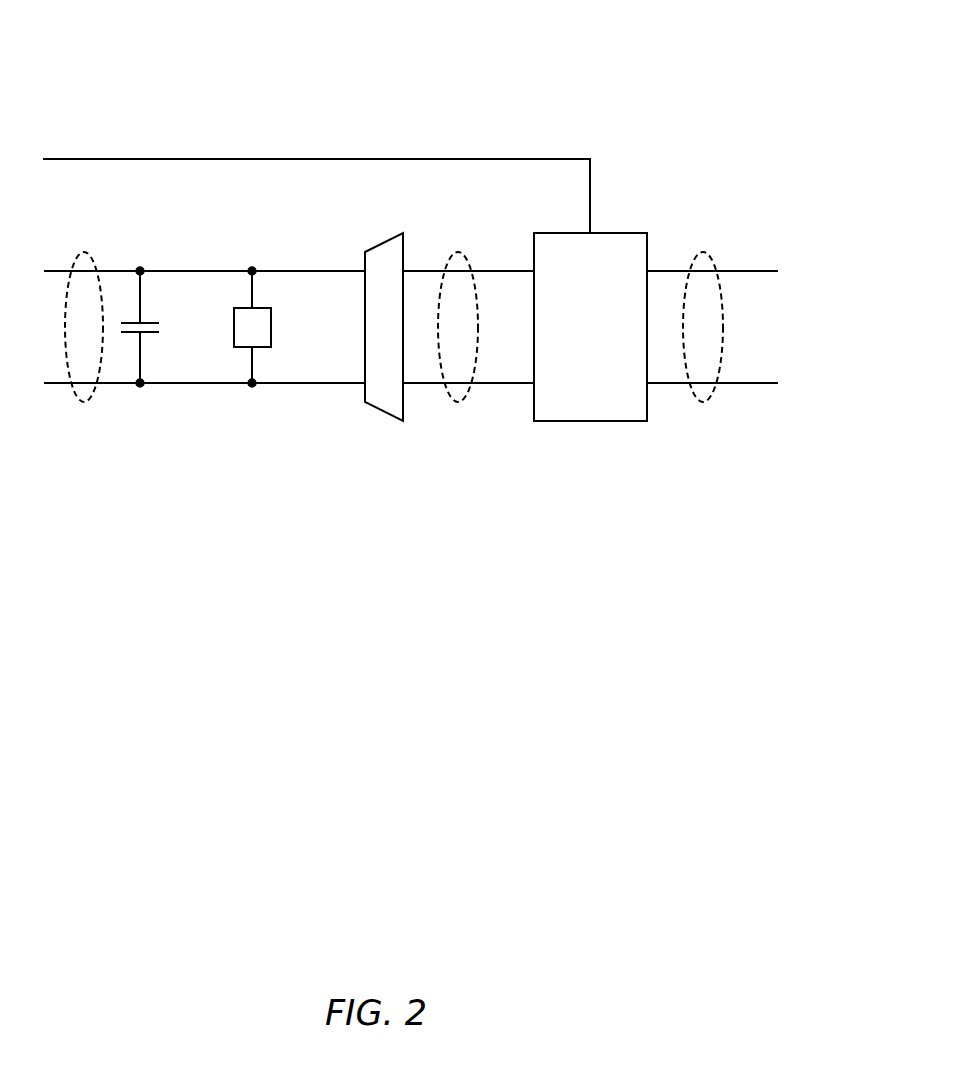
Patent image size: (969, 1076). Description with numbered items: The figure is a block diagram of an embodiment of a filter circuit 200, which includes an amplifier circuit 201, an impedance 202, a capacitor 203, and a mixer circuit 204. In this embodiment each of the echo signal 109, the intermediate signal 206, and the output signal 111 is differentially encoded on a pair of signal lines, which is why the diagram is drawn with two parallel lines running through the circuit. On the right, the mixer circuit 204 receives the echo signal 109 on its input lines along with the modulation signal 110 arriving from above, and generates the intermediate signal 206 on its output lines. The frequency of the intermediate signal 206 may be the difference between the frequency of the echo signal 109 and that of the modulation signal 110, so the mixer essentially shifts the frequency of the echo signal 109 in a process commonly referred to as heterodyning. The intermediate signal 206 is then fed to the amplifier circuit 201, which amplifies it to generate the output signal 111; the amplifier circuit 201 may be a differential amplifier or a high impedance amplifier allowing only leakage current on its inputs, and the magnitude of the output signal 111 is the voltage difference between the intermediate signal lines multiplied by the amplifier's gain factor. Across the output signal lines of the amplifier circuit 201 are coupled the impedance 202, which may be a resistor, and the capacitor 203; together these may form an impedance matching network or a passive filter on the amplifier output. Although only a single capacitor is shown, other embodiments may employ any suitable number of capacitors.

The filter circuit 200 is at (609, 74).
The modulation signal 110 is at (316, 167).
The output signal 111 is at (88, 418).
The capacitor 203 is at (150, 335).
The impedance 202 is at (272, 320).
The amplifier circuit 201 is at (380, 246).
The intermediate signal 206 is at (462, 418).
The mixer circuit 204 is at (571, 368).
The echo signal 109 is at (706, 418).